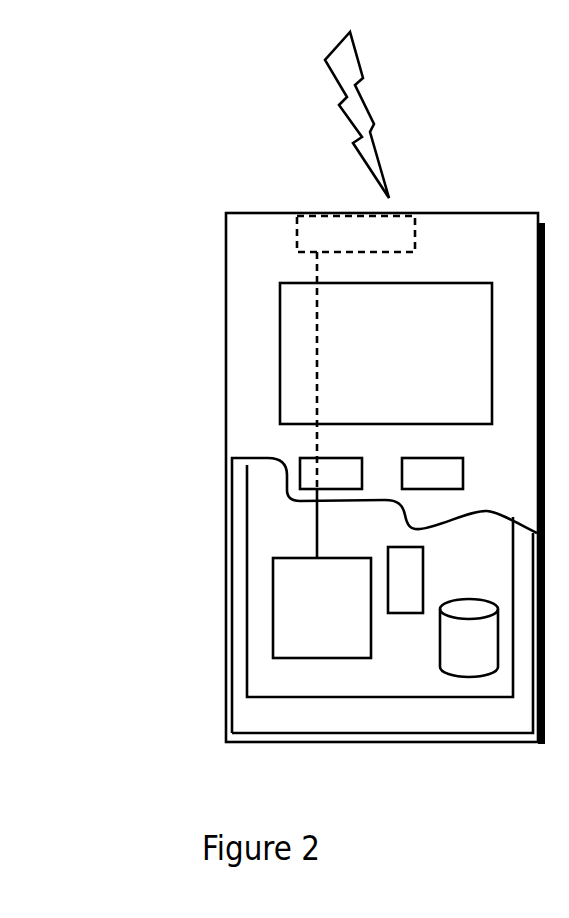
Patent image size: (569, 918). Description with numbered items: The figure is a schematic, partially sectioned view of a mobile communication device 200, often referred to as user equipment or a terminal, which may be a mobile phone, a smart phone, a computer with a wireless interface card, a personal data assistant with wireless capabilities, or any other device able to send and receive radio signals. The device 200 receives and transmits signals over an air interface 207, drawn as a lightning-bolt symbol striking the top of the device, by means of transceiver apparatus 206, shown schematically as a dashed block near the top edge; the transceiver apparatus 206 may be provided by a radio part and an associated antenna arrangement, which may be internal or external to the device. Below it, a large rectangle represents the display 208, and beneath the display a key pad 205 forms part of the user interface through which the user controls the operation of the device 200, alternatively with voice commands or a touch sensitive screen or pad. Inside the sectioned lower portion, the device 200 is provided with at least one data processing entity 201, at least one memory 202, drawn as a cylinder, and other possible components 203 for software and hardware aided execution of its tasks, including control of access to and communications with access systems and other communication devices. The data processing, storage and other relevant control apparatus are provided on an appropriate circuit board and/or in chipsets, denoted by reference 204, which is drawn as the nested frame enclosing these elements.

The communication device 200 is at (227, 258).
The data processing entity 201 is at (280, 592).
The memory 202 is at (462, 651).
The other possible components 203 is at (405, 563).
The circuit board and/or chipsets 204 is at (273, 678).
The key pad 205 is at (303, 473).
The transceiver apparatus 206 is at (403, 227).
The air interface 207 is at (387, 144).
The display 208 is at (298, 339).